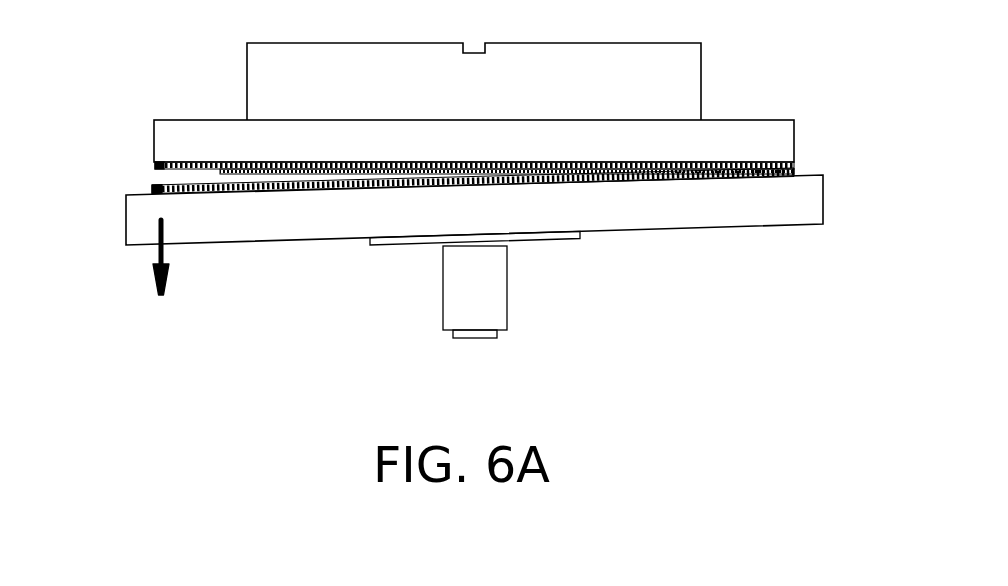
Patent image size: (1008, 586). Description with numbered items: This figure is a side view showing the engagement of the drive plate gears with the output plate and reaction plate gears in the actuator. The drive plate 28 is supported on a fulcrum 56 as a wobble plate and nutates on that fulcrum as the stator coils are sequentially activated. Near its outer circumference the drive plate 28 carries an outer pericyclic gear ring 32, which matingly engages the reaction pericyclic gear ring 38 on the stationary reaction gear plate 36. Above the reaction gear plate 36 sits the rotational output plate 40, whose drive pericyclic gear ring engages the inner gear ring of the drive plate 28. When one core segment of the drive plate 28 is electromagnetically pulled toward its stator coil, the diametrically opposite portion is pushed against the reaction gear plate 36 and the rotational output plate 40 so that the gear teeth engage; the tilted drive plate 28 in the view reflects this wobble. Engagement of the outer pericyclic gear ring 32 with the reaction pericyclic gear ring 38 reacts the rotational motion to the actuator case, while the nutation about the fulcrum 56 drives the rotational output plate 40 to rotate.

The drive plate 28 is at (766, 210).
The outer pericyclic gear ring 32 is at (160, 186).
The reaction gear plate 36 is at (788, 132).
The reaction pericyclic gear ring 38 is at (167, 168).
The rotational output plate 40 is at (685, 83).
The fulcrum 56 is at (485, 294).